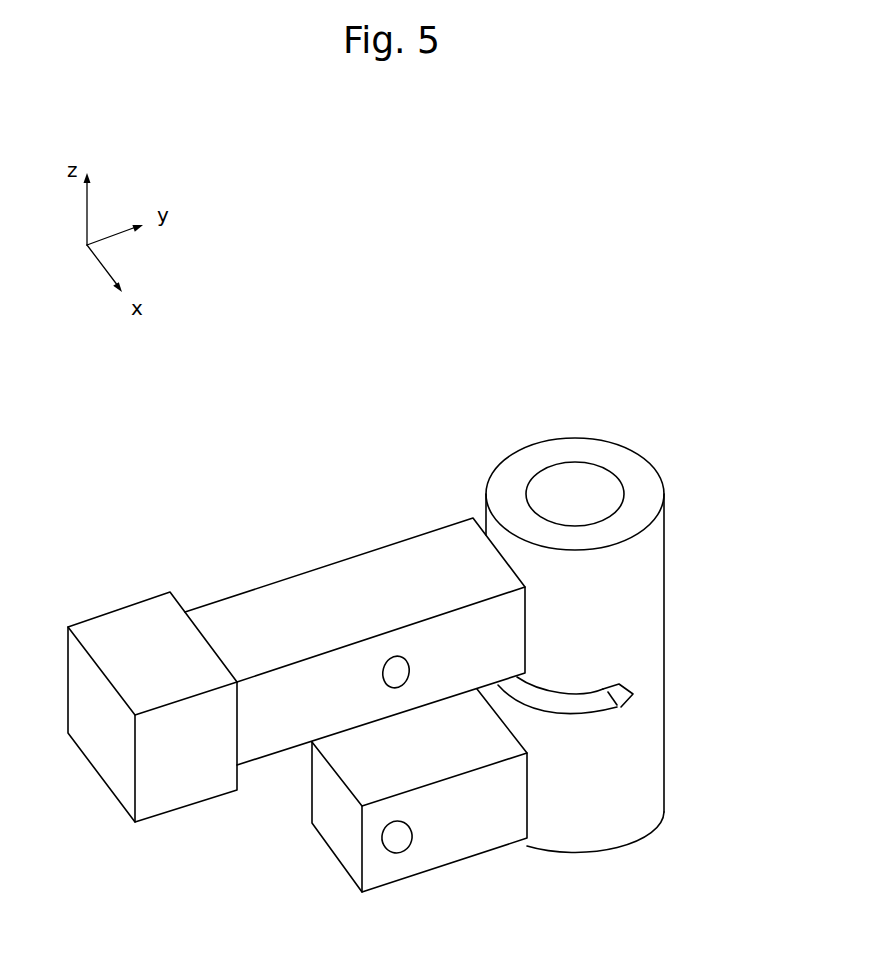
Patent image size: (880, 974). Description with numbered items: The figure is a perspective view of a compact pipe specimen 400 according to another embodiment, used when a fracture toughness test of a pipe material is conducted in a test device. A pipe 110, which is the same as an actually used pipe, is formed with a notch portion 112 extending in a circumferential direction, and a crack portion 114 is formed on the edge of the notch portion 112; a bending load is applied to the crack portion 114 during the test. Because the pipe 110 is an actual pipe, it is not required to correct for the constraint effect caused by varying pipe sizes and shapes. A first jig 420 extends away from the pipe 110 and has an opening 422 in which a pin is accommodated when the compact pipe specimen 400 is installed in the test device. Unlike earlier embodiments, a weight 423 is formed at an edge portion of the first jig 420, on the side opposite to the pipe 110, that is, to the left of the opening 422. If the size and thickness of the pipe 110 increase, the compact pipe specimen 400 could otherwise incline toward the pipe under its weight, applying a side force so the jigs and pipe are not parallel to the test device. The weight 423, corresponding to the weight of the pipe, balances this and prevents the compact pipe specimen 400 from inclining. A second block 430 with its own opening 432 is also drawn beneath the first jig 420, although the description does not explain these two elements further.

The compact pipe specimen 400 is at (568, 378).
The pipe 110 is at (645, 582).
The notch portion 112 is at (606, 714).
The crack portion 114 is at (645, 682).
The first jig 420 is at (254, 605).
The opening 422 is at (400, 660).
The weight 423 is at (130, 622).
The lower block 430 is at (335, 830).
The hole 432 is at (400, 848).